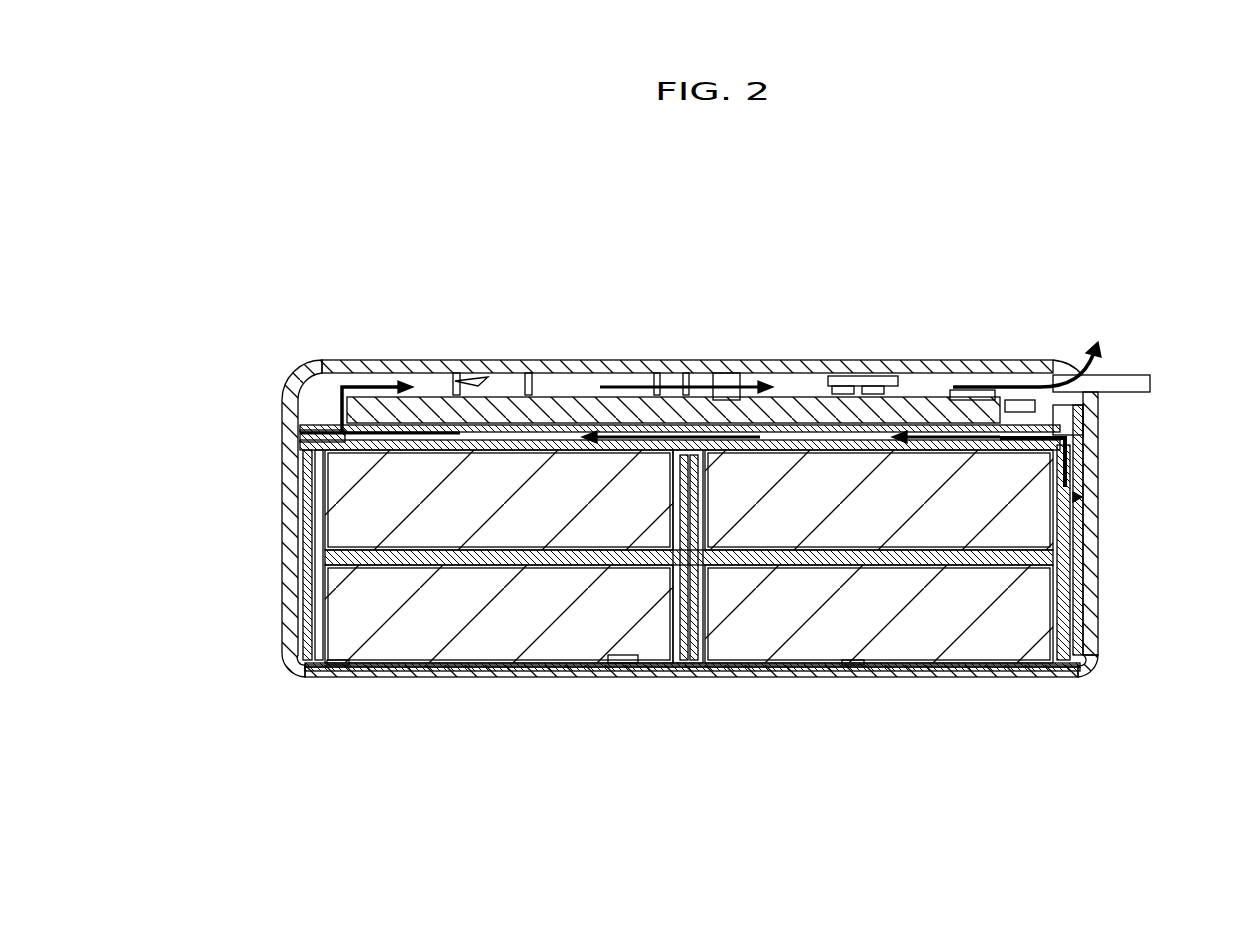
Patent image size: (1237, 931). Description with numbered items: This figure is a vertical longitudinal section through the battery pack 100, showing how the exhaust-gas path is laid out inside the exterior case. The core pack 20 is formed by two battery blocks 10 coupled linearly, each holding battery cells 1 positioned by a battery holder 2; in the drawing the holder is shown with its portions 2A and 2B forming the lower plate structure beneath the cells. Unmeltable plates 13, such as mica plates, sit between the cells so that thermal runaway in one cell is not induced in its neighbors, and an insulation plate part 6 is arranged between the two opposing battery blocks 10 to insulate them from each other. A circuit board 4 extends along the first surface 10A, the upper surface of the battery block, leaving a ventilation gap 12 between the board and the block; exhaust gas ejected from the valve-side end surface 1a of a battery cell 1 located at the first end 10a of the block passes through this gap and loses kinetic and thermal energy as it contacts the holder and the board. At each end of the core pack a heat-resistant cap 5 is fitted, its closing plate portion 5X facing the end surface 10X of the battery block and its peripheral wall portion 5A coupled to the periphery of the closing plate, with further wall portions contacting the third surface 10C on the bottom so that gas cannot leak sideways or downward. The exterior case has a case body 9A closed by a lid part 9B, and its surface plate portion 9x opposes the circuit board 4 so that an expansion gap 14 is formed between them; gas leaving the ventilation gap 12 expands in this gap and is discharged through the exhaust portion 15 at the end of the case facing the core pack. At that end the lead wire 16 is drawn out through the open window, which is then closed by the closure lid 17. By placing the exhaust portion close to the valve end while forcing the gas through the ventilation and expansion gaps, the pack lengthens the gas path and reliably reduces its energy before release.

The battery pack 100 is at (706, 500).
The core pack 20 is at (680, 328).
The battery block 10 is at (720, 515).
The first surface 10A is at (935, 362).
The third surface 10C is at (1020, 677).
The end surface 10X is at (1062, 462).
The first end 10a is at (1029, 427).
The circuit board 4 is at (790, 270).
The case body 9A is at (468, 365).
The surface plate portion 9x is at (668, 365).
The lid part 9B is at (622, 680).
The expansion gap 14 is at (437, 383).
The exhaust portion 15 is at (1058, 360).
The lead wire 16 is at (1112, 372).
The closure lid 17 is at (893, 365).
The ventilation gap 12 is at (802, 440).
The battery cell 1 is at (490, 522).
The valve-side end surface 1a is at (1080, 498).
The unmeltable plate 13 is at (331, 668).
The insulation plate part 6 is at (716, 660).
The battery holder 2 is at (692, 735).
The upper layer of bottom plate 2A is at (600, 680).
The lower layer of bottom plate 2B is at (580, 760).
The heat-resistant cap 5 is at (706, 530).
The peripheral wall portion 5A is at (318, 438).
The closing plate portion 5X is at (228, 400).